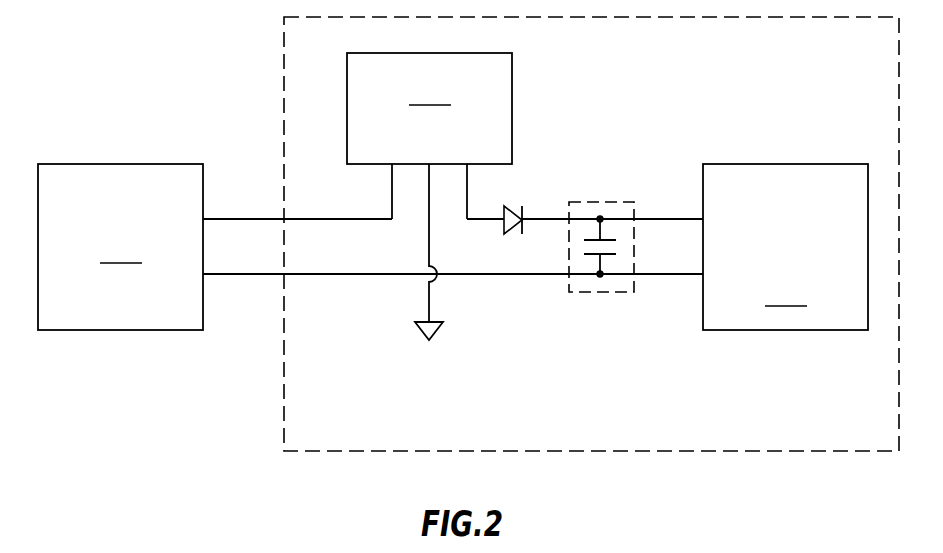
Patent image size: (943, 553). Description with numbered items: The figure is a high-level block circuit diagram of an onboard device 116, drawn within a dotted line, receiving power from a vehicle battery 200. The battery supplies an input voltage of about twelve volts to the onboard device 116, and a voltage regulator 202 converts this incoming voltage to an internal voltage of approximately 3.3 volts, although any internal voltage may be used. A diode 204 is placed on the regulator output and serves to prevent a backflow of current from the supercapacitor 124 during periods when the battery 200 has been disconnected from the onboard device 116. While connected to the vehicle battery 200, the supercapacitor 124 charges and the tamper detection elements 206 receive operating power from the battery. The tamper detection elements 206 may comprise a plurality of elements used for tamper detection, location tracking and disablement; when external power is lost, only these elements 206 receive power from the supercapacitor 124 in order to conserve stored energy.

The onboard device 116 is at (284, 69).
The vehicle battery 200 is at (370, 247).
The voltage regulator 202 is at (425, 196).
The diode 204 is at (510, 208).
The supercapacitor 124 is at (612, 293).
The tamper detection elements 206 is at (785, 247).